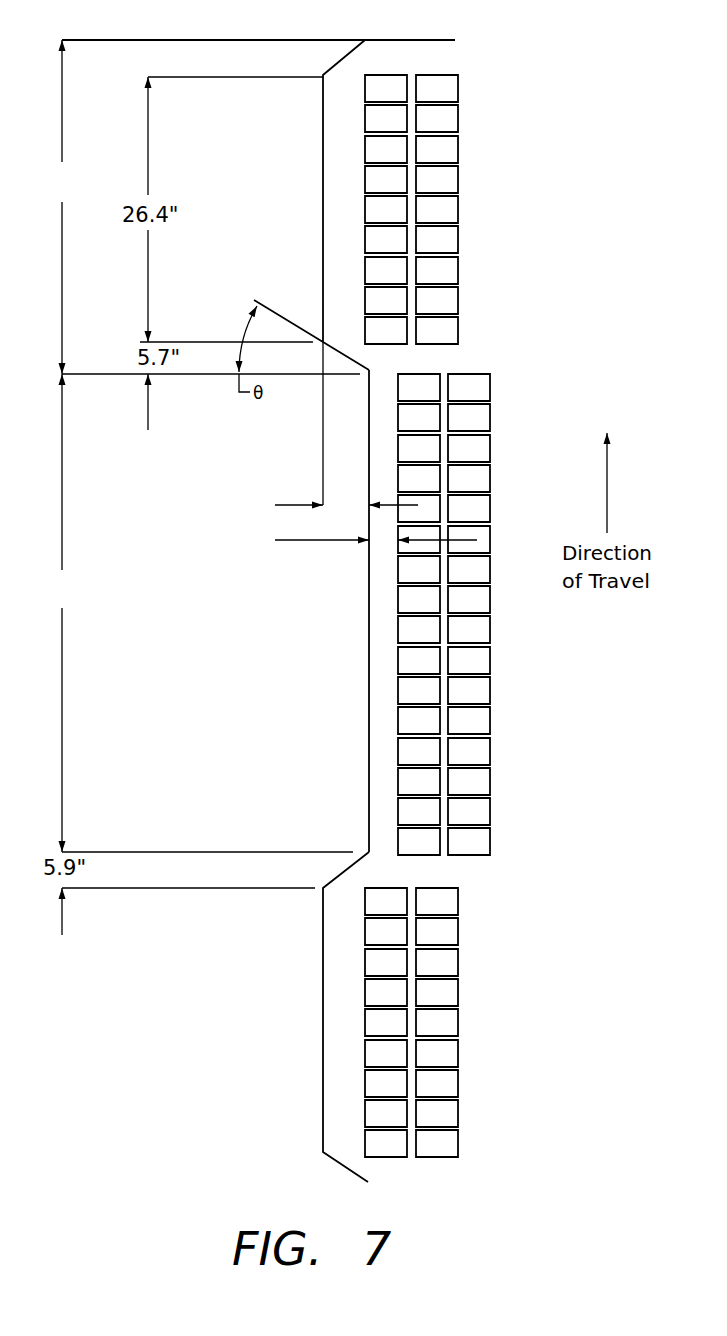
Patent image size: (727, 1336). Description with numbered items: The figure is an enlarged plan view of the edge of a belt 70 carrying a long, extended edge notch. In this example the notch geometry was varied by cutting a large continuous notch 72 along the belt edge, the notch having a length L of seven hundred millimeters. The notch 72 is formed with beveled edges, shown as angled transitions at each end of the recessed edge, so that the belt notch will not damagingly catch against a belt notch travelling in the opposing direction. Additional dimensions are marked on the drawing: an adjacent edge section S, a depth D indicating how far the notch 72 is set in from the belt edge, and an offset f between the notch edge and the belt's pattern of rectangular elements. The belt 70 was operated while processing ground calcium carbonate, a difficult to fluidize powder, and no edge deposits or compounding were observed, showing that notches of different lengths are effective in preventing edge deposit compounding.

The belt 70 is at (515, 72).
The large continuous notch 72 is at (369, 675).
The shoulder section length S is at (61, 207).
The length L is at (63, 613).
The offset distance D is at (333, 430).
The gap distance f is at (367, 541).